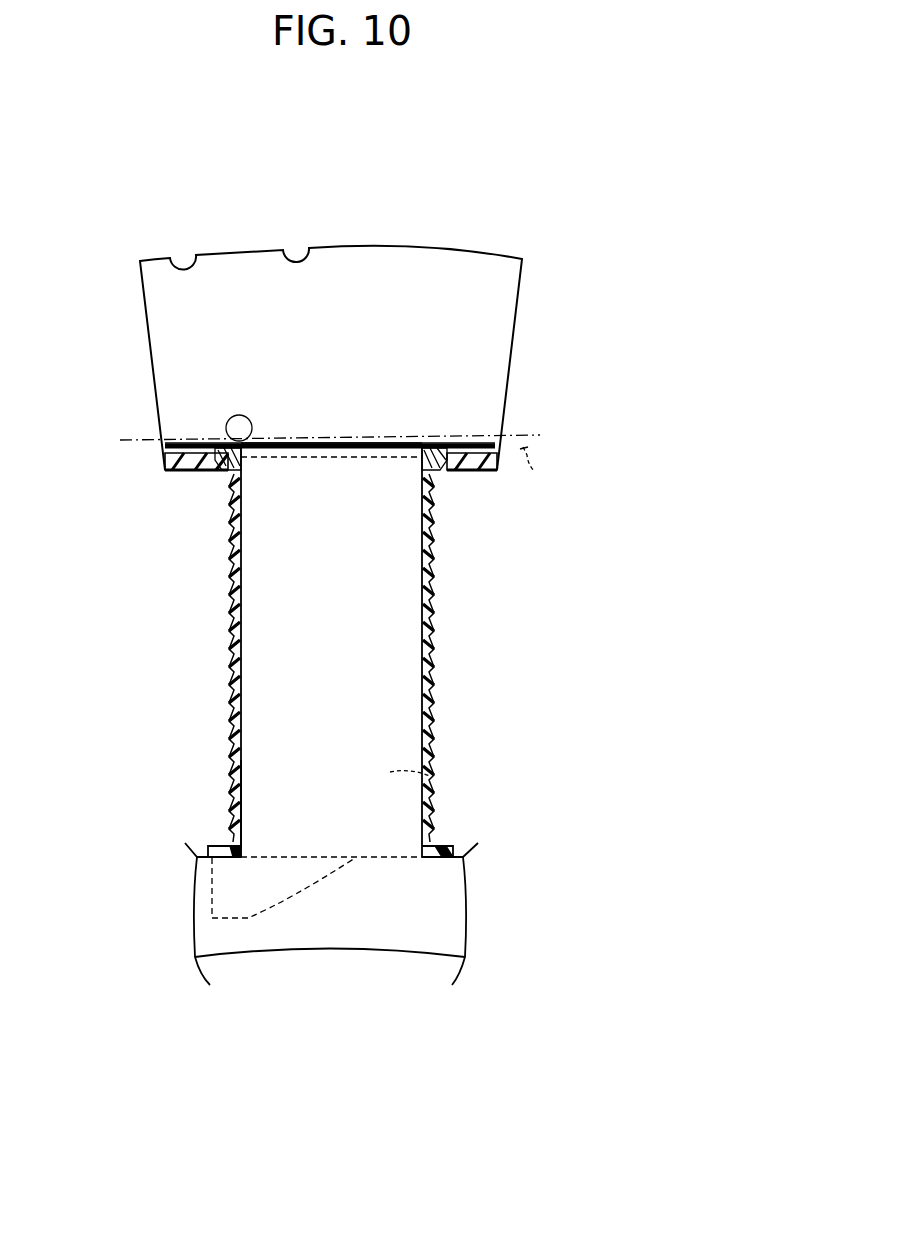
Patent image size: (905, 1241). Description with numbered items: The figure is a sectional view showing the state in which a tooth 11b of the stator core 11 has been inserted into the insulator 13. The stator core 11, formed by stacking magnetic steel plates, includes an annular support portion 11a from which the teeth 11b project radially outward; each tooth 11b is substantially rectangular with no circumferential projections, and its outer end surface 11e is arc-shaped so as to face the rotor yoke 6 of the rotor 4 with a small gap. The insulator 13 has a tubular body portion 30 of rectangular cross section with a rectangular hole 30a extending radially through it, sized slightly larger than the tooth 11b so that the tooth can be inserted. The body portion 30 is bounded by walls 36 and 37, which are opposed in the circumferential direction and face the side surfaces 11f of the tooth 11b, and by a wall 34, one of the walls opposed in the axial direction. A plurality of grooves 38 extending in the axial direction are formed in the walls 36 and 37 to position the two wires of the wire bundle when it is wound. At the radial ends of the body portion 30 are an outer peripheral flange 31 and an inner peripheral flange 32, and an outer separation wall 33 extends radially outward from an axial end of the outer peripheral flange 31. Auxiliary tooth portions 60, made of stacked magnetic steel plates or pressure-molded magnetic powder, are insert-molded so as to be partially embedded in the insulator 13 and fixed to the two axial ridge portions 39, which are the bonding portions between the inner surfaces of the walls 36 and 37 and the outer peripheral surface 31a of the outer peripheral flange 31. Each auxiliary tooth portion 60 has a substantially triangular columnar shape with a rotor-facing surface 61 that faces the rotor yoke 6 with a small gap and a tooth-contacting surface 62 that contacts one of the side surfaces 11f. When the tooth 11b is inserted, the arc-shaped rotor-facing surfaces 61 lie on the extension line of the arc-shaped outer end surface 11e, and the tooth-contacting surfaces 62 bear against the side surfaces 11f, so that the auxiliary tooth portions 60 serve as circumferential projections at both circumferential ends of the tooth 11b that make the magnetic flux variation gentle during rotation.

The insulator 13 is at (341, 342).
The outer separation wall 33 is at (170, 303).
The outer peripheral flange 31 is at (128, 457).
The outer peripheral surface of the outer peripheral flange 31a is at (450, 455).
The axial ridge portions 39 is at (331, 449).
The rotor-facing surface 61 is at (232, 446).
The tooth-contacting surface 62 is at (242, 455).
The auxiliary tooth portions 60 is at (236, 437).
The rotor yoke 6 is at (576, 465).
The rotor 4 is at (524, 448).
The stator core 11 is at (332, 618).
The support portion 11a is at (440, 908).
The teeth 11b is at (370, 710).
The outer end surfaces 11e is at (330, 444).
The side surfaces 11f is at (233, 530).
The body portion 30 is at (303, 754).
The wall 36 is at (235, 603).
The wall 37 is at (430, 603).
The grooves 38 is at (332, 653).
The inner peripheral flange 32 is at (218, 846).
The rectangular hole 30a is at (242, 787).
The wall 34 is at (430, 776).